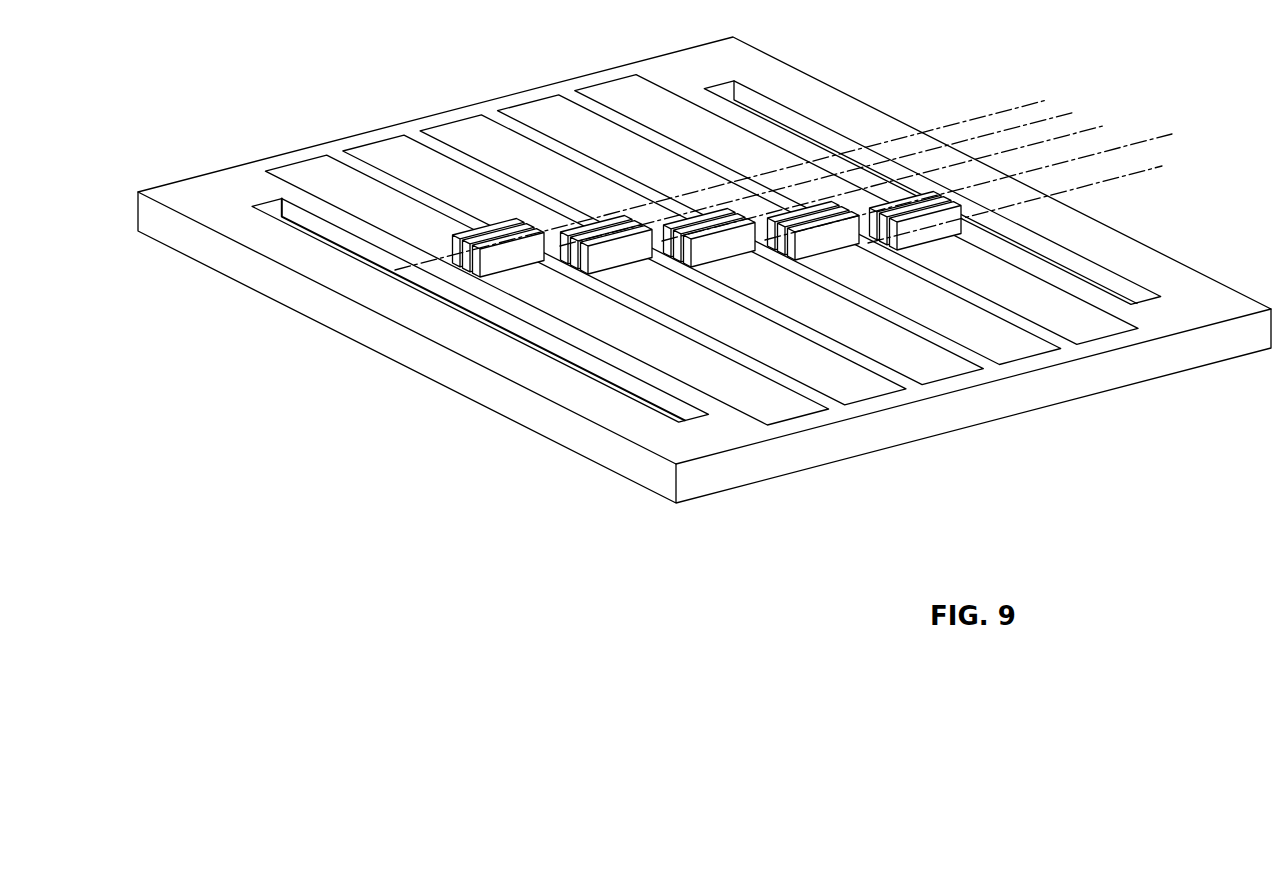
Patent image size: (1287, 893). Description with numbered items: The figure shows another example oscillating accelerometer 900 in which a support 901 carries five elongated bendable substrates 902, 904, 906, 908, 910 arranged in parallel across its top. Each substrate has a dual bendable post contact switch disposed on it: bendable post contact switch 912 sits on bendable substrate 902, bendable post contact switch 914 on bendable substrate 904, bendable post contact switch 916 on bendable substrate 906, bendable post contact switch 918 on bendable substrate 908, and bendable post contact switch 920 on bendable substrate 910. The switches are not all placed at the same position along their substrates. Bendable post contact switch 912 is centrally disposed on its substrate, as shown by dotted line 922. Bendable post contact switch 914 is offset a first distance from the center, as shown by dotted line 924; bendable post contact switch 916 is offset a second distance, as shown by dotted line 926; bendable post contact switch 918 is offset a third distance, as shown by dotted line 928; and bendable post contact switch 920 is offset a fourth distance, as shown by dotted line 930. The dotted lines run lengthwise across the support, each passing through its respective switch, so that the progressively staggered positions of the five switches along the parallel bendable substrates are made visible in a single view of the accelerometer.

The oscillating accelerometer 900 is at (1178, 347).
The support 901 is at (930, 410).
The bendable substrate 902 is at (303, 168).
The bendable substrate 904 is at (383, 150).
The bendable substrate 906 is at (467, 130).
The bendable substrate 908 is at (545, 102).
The bendable substrate 910 is at (625, 90).
The dual bendable post contact switch 912 is at (500, 263).
The dual bendable post contact switch 914 is at (627, 250).
The dual bendable post contact switch 916 is at (735, 248).
The dual bendable post contact switch 918 is at (815, 238).
The dual bendable post contact switch 920 is at (918, 228).
The dotted line 922 is at (957, 122).
The dotted line 924 is at (1013, 128).
The dotted line 926 is at (1092, 129).
The dotted line 928 is at (1152, 137).
The dotted line 930 is at (1155, 165).